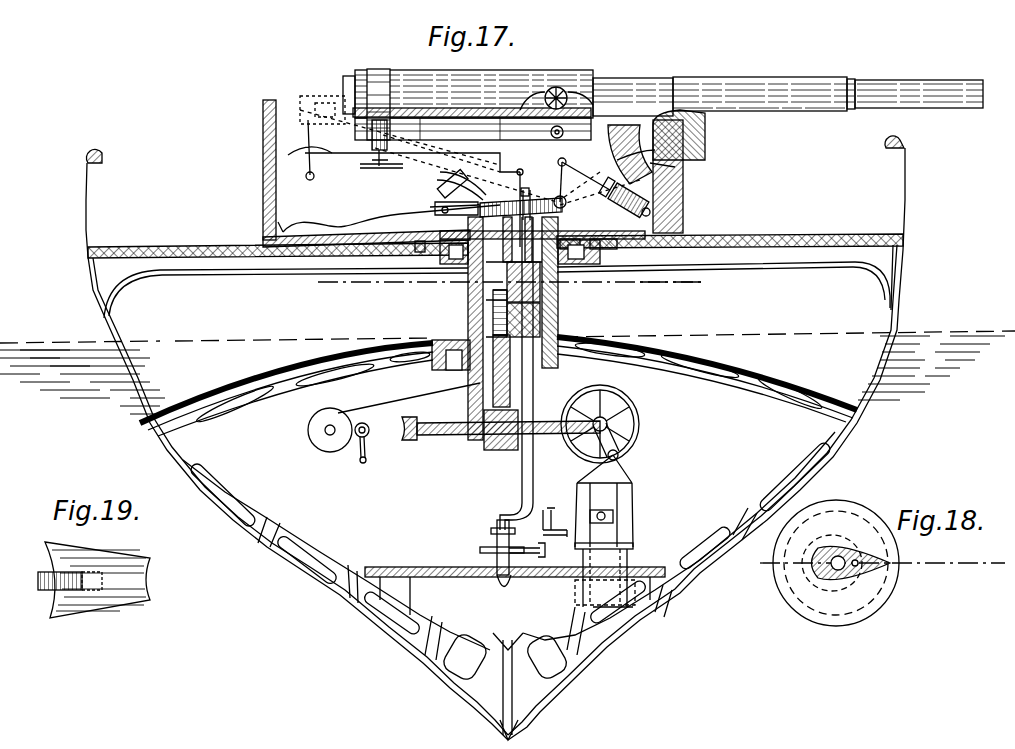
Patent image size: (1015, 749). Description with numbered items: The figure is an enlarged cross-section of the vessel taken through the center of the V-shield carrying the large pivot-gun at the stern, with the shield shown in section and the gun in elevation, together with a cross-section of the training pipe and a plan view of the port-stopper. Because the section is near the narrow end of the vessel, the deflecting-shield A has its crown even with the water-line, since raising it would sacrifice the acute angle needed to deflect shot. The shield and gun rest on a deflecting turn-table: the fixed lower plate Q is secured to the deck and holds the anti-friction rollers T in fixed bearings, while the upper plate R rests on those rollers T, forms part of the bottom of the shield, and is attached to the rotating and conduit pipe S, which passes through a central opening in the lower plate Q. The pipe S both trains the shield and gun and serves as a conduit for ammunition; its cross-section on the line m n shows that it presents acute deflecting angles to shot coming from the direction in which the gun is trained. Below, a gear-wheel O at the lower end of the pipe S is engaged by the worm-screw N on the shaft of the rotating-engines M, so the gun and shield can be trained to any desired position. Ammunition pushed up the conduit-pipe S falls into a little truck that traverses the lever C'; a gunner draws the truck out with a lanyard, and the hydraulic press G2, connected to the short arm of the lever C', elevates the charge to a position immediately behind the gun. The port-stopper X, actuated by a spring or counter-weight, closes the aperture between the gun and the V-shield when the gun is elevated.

In FIG. 17, the deflecting-shield A is at (498, 386).
In FIG. 17, the section line m n m is at (511, 274).
In FIG. 17, the section line m n is at (677, 271).
In FIG. 17, the upper plate R is at (542, 233).
In FIG. 17, the port-stopper X is at (661, 171).
In FIG. 17, the lever C' is at (389, 201).
In FIG. 17, the rack E' is at (490, 207).
In FIG. 17, the hydraulic press G2 is at (602, 188).
In FIG. 17, the rotating and conduit pipe S is at (448, 360).
In FIG. 18, the rotating and conduit pipe S is at (845, 562).
In FIG. 17, the anti-friction rollers T is at (495, 255).
In FIG. 17, the lower plate Q is at (416, 256).
In FIG. 17, the gear-wheel O is at (454, 432).
In FIG. 17, the worm-screw N is at (600, 424).
In FIG. 17, the rotating-engines M is at (611, 531).